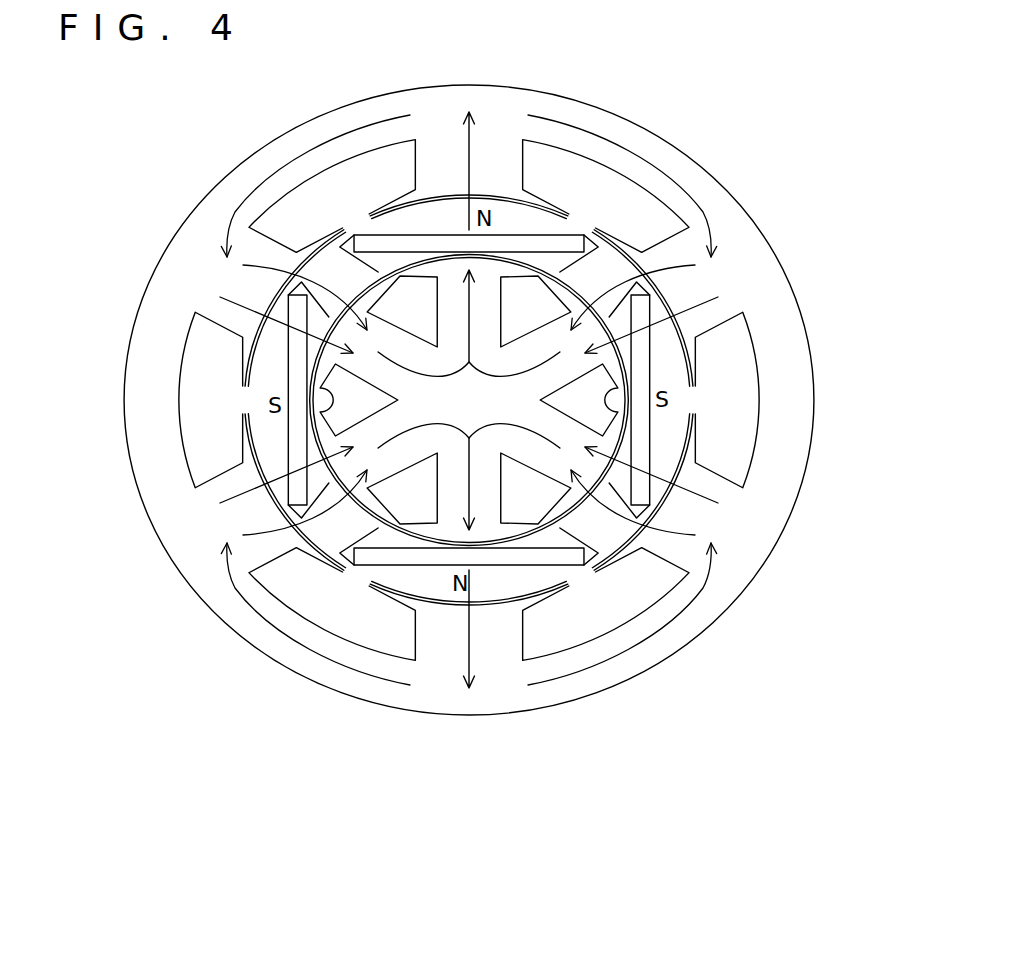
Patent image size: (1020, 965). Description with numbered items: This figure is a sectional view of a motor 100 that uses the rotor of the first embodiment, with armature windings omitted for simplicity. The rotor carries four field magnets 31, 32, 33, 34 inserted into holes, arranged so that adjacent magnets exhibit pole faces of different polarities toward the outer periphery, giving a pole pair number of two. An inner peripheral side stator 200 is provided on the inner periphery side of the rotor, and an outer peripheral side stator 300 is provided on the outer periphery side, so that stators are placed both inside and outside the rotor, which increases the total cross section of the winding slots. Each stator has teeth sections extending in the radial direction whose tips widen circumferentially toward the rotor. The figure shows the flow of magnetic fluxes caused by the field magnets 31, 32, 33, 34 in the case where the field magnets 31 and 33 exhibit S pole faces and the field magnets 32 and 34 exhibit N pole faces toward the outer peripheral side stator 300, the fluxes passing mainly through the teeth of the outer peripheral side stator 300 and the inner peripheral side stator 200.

The stator 100 is at (517, 400).
The inner peripheral side stator 200 is at (468, 400).
The outer peripheral side stator 300 is at (453, 734).
The field magnet 31 is at (650, 430).
The field magnet 32 is at (545, 245).
The field magnet 33 is at (297, 368).
The field magnet 34 is at (388, 562).